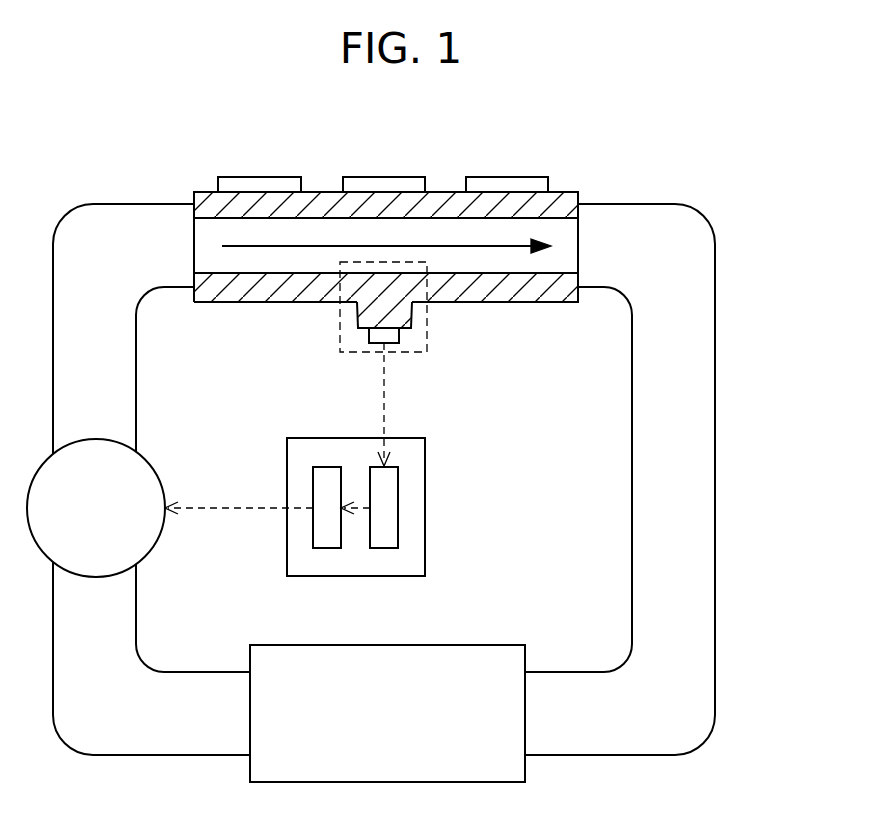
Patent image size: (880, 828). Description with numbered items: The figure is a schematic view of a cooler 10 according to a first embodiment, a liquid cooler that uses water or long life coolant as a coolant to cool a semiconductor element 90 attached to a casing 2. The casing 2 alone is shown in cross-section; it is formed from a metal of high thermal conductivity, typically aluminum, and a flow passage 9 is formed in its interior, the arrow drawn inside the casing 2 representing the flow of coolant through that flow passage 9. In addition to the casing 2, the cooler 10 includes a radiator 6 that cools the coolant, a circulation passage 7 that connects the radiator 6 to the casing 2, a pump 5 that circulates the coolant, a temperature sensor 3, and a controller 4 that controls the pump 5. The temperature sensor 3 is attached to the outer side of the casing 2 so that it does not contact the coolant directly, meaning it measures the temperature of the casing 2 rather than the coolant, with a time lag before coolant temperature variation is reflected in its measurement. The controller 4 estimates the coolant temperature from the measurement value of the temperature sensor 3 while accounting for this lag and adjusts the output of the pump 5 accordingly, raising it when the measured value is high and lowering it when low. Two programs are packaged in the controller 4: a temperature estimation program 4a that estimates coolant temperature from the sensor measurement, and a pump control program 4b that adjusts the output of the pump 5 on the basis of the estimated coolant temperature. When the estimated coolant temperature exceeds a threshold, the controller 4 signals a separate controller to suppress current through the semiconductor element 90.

The cooler 10 is at (136, 152).
The flow passage 9 is at (210, 235).
The semiconductor element 90 is at (265, 177).
The casing 2 is at (562, 196).
The temperature sensor 3 is at (367, 332).
The controller 4 is at (398, 538).
The temperature estimation program 4a is at (397, 537).
The pump control program 4b is at (326, 548).
The pump 5 is at (142, 558).
The radiator 6 is at (505, 645).
The circulation passage 7 is at (715, 408).